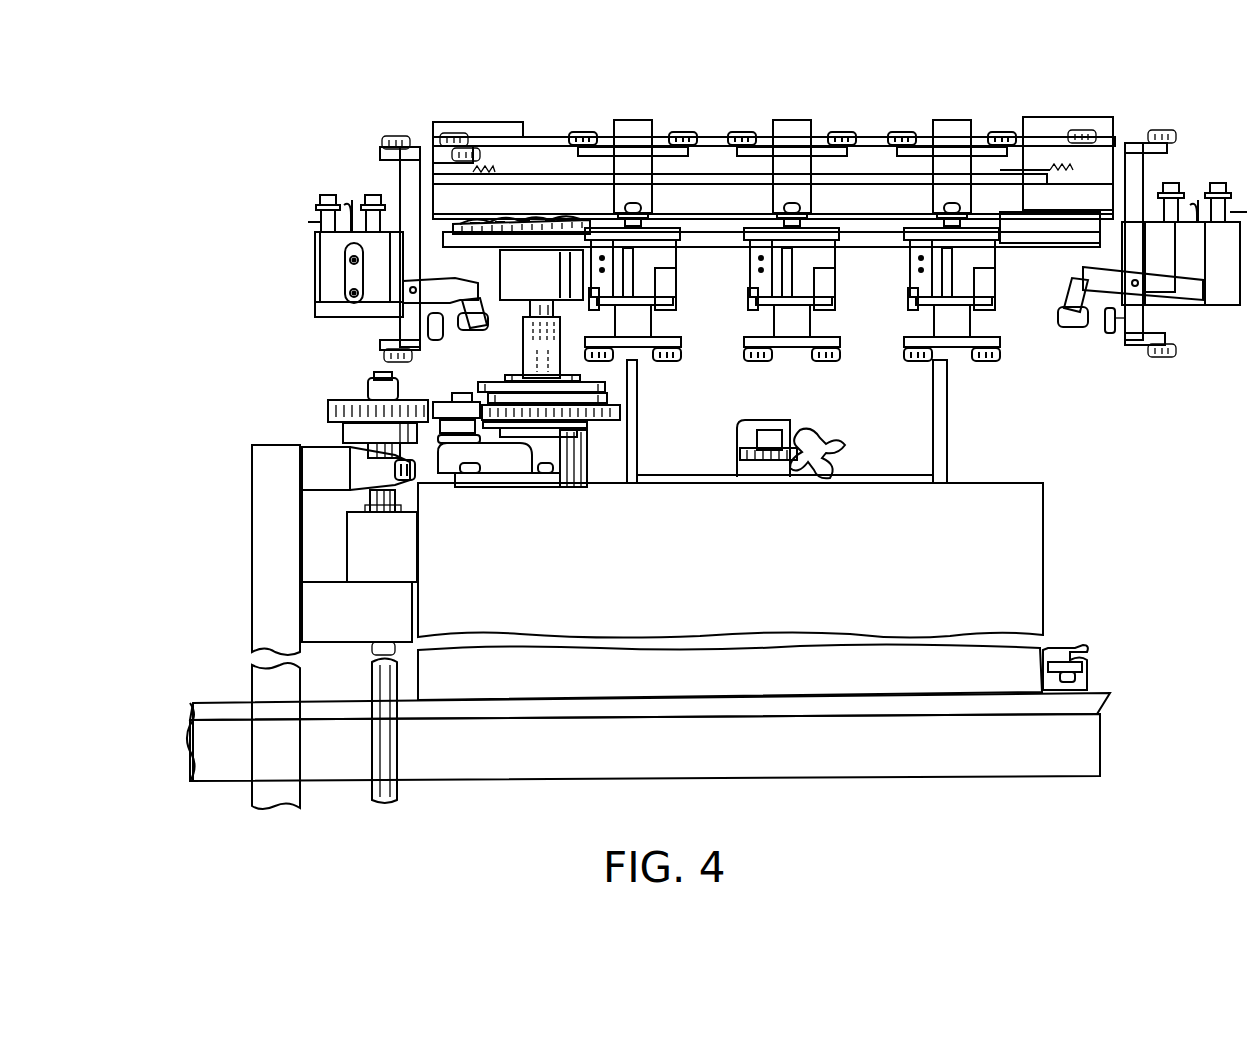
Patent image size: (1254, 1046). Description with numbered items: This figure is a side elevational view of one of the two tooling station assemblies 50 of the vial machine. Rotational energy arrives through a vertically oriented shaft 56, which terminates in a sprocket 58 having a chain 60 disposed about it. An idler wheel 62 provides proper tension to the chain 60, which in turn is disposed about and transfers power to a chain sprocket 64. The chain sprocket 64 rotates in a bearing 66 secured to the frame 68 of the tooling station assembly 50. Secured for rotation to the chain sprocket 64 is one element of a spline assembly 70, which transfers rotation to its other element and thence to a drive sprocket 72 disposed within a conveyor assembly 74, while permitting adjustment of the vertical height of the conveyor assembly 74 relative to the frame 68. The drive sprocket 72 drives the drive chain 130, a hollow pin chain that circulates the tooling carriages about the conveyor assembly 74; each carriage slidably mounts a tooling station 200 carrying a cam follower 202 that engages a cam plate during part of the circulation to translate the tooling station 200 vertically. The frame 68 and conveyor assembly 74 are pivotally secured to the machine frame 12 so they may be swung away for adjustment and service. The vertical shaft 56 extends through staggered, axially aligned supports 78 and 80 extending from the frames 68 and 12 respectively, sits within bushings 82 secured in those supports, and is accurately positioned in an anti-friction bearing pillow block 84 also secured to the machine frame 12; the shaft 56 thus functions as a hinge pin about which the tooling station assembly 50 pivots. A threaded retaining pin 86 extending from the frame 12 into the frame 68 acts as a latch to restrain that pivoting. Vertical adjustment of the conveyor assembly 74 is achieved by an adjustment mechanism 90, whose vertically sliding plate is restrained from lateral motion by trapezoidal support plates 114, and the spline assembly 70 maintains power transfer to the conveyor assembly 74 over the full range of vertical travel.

The frame 12 is at (272, 583).
The tooling station assembly 50 is at (1128, 477).
The vertical shaft 56 is at (376, 682).
The sprocket 58 is at (352, 435).
The chain 60 is at (330, 403).
The idler wheel 62 is at (447, 408).
The chain sprocket 64 is at (595, 423).
The bearing 66 is at (562, 450).
The frame 68 is at (715, 599).
The spline assembly 70 is at (512, 349).
The drive sprocket 72 is at (505, 232).
The conveyor assembly 74 is at (1023, 272).
The support 78 is at (392, 559).
The support 80 is at (368, 623).
The bushing 82 is at (368, 508).
The anti-friction bearing pillow block 84 is at (383, 470).
The threaded retaining pin 86 is at (1087, 657).
The adjustment mechanism 90 is at (890, 430).
The trapezoidal support plate 114 is at (627, 450).
The drive chain 130 is at (533, 228).
The tooling station 200 is at (288, 261).
The cam follower 202 is at (1110, 335).